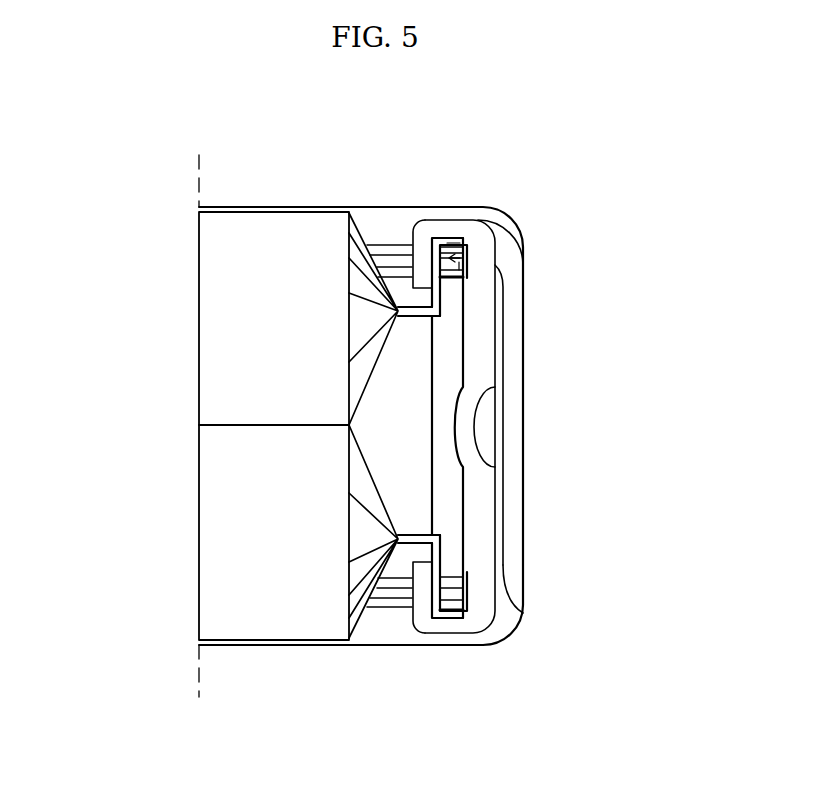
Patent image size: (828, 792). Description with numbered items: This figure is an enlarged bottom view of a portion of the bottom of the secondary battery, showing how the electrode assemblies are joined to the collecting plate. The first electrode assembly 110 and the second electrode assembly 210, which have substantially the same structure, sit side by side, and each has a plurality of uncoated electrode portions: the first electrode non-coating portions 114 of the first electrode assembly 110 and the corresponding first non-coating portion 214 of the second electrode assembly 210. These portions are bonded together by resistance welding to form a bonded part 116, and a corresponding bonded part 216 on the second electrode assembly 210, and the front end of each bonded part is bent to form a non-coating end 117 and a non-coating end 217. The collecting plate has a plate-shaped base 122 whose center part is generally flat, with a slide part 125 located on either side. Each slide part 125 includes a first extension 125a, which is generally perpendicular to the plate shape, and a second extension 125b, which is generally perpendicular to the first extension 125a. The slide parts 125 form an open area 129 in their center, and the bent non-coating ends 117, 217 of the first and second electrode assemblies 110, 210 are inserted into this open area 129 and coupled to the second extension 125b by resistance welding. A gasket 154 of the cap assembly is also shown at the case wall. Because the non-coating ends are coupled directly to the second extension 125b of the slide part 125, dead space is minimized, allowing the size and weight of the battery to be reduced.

The first electrode assembly 110 is at (222, 322).
The second electrode assembly 210 is at (222, 542).
The first electrode non-coating portions 114 is at (365, 283).
The first non-coating portion of the second electrode assembly 214 is at (363, 568).
The bonded part 116 is at (410, 322).
The non-coating end 117 is at (435, 295).
The base 122 is at (487, 478).
The slide part 125 is at (507, 148).
The first extension 125a is at (450, 240).
The second extension 125b is at (423, 266).
The open area 129 is at (452, 256).
The gasket 154 is at (510, 255).
The bonded part of the second electrode assembly 216 is at (413, 533).
The non-coating end of the second electrode assembly 217 is at (437, 558).